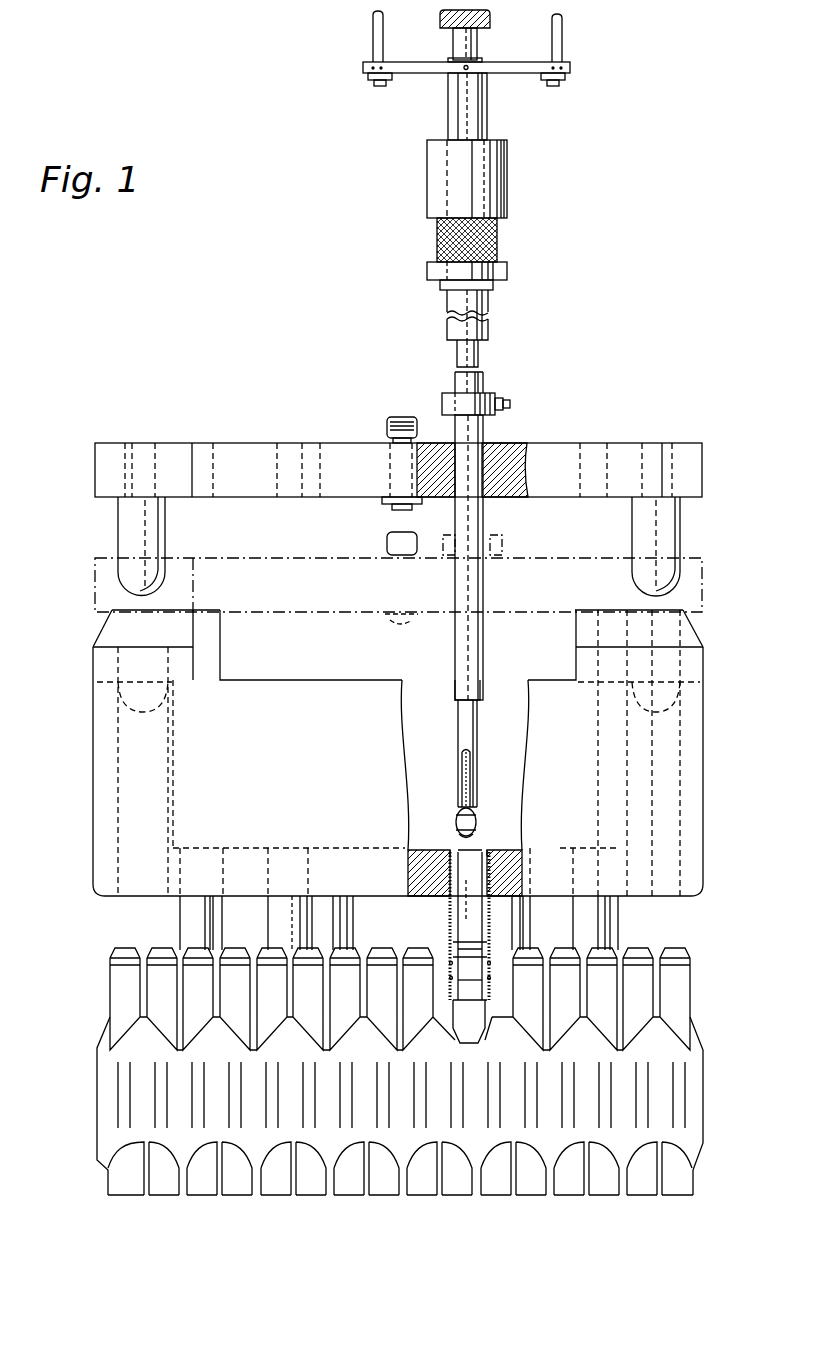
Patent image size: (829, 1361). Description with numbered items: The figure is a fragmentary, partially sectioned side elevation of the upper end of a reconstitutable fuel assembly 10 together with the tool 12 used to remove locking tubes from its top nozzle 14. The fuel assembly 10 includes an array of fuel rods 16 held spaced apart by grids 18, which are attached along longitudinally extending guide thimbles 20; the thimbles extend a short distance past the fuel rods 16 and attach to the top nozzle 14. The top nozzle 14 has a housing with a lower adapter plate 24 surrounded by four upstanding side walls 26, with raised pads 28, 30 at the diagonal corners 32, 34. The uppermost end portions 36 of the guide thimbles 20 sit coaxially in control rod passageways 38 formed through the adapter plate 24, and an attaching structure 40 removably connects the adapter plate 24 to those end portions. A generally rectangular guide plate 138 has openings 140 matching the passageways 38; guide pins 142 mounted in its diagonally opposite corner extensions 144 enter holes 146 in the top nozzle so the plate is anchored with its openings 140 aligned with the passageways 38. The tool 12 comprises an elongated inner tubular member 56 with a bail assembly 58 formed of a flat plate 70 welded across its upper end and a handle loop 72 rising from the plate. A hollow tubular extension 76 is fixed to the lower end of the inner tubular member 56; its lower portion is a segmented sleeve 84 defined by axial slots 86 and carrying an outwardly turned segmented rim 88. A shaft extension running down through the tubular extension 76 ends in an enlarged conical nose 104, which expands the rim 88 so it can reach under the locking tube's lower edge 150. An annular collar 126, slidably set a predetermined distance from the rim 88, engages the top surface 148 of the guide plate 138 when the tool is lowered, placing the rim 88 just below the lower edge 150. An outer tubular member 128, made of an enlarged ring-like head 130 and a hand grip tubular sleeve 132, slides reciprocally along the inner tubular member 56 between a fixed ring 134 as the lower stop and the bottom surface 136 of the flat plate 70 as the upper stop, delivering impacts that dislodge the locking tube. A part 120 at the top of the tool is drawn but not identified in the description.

The reconstitutable fuel assembly 10 is at (712, 756).
The tool 12 is at (590, 207).
The top nozzle 14 is at (706, 829).
The fuel rods 16 is at (148, 981).
The grids 18 is at (705, 1096).
The guide thimbles 20 is at (262, 915).
The adapter plate 24 is at (100, 851).
The side walls 26 is at (93, 798).
The pads 28 is at (176, 612).
The pads 30 is at (600, 612).
The diagonal corner 32 is at (93, 661).
The diagonal corner 34 is at (703, 661).
The uppermost end portions 36 is at (450, 923).
The control rod passageways 38 is at (290, 853).
The attaching structure 40 is at (497, 848).
The inner tubular member 56 is at (490, 117).
The bail assembly 58 is at (565, 38).
The flat plate 70 is at (408, 76).
The handle loop 72 is at (371, 38).
The tubular extension 76 is at (484, 431).
The segmented sleeve 84 is at (477, 760).
The axially-extending slots 86 is at (462, 753).
The segmented rim 88 is at (462, 808).
The conical nose 104 is at (460, 823).
The knob 120 is at (541, 27).
The annular collar 126 is at (442, 403).
The outer tubular member 128 is at (426, 161).
The ring-like head 130 is at (509, 171).
The hand grip tubular sleeve 132 is at (498, 241).
The ring 134 is at (495, 283).
The bottom surface 136 is at (546, 81).
The guide plate 138 is at (245, 441).
The openings 140 is at (592, 442).
The guide pins 142 is at (118, 529).
The corner extensions 144 is at (118, 443).
The holes 146 is at (150, 705).
The top surface 148 is at (262, 443).
The lower edge 150 is at (455, 946).